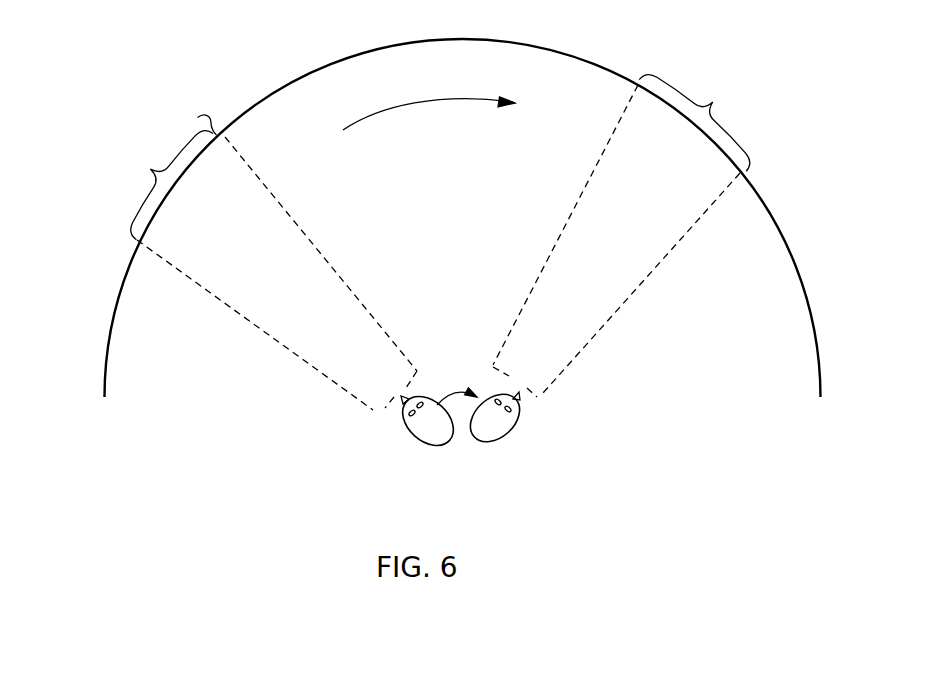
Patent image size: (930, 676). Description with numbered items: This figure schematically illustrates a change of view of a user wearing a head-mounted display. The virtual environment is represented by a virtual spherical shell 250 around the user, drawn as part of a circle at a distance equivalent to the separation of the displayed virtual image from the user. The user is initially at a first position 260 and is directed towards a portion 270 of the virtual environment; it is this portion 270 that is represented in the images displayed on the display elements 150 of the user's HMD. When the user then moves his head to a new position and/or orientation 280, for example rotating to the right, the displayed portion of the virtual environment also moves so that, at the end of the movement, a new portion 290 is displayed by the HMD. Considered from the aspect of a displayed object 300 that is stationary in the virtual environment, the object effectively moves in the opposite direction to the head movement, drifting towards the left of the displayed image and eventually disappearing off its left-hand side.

The display elements 150 is at (392, 398).
The spherical shell 250 is at (105, 350).
The first position 260 is at (412, 432).
The portion of the virtual environment 270 is at (156, 161).
The new position and/or orientation 280 is at (515, 430).
The new portion 290 is at (714, 102).
The displayed object 300 is at (204, 121).